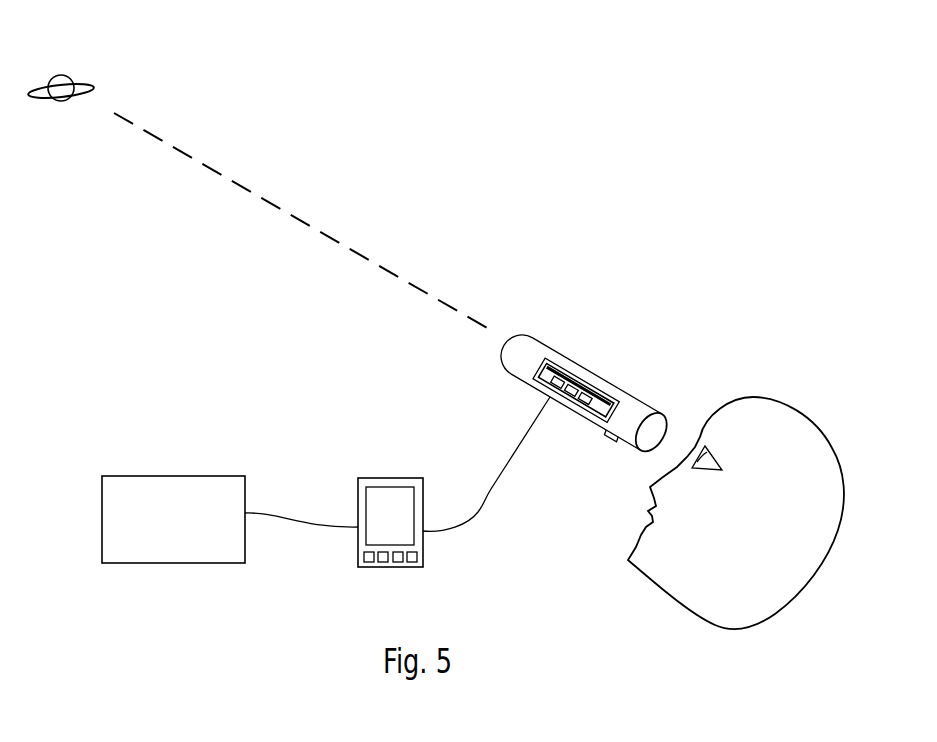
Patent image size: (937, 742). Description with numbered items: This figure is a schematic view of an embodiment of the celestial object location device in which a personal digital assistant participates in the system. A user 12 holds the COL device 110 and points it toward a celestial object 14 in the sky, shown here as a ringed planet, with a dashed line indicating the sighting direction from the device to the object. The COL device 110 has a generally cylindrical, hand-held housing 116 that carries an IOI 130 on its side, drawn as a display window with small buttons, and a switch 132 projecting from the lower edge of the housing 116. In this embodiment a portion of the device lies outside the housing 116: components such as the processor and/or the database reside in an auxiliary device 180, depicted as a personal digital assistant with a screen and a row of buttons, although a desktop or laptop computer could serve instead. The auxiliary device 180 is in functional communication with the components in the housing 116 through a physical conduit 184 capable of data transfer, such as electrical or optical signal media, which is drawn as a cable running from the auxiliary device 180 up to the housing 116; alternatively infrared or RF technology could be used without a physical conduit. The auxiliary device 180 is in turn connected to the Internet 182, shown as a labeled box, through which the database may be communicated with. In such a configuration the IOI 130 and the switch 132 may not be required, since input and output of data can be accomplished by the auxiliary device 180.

The user 12 is at (746, 397).
The celestial object 14 is at (66, 75).
The COL device 110 is at (579, 380).
The housing 116 is at (510, 383).
The IOI 130 is at (551, 361).
The switch 132 is at (608, 446).
The auxiliary device 180 is at (380, 478).
The Internet 182 is at (163, 475).
The physical conduit 184 is at (477, 518).